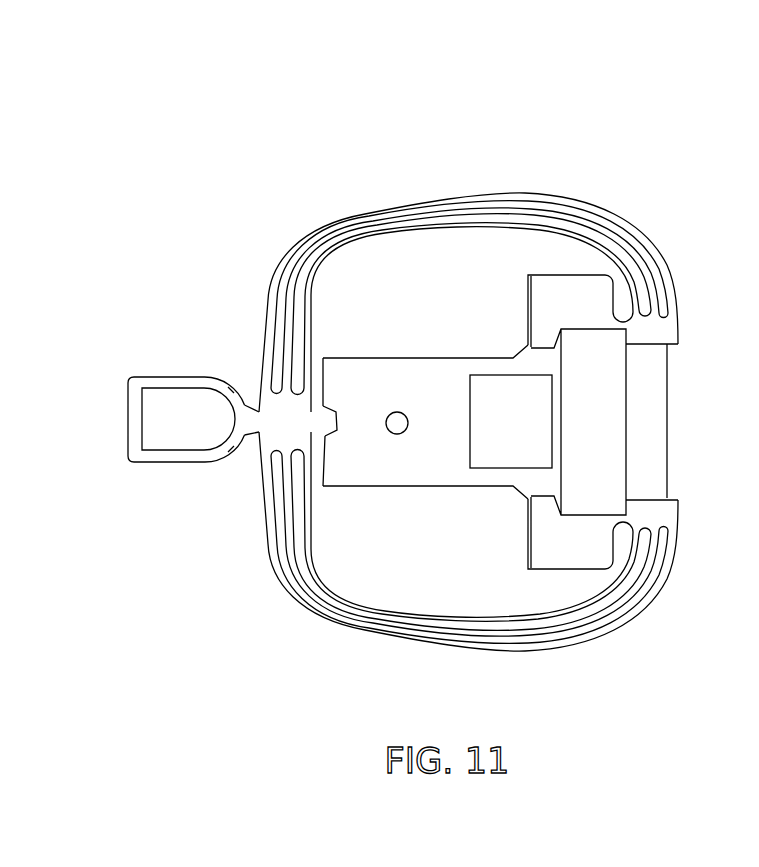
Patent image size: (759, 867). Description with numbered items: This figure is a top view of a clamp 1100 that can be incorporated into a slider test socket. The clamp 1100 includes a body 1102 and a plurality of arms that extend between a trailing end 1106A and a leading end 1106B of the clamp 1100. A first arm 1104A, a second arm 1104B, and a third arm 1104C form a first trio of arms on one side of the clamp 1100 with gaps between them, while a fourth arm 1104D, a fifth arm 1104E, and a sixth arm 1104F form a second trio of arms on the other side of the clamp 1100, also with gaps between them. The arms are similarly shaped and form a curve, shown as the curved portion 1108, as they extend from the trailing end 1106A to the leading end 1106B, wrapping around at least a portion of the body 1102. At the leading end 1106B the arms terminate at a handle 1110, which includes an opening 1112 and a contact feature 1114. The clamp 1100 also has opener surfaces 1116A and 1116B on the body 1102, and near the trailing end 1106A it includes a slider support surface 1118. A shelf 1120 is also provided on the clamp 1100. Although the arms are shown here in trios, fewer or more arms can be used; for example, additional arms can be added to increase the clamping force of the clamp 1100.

The clamp 1100 is at (277, 163).
The body 1102 is at (667, 331).
The first arm 1104A is at (583, 218).
The second arm 1104B is at (520, 215).
The third arm 1104C is at (433, 234).
The fourth arm 1104D is at (566, 637).
The fifth arm 1104E is at (497, 627).
The sixth arm 1104F is at (443, 608).
The trailing end 1106A is at (666, 508).
The leading end 1106B is at (263, 353).
The curved portion 1108 is at (374, 212).
The handle 1110 is at (137, 390).
The opening 1112 is at (193, 437).
The contact feature 1114 is at (322, 414).
The opener surface 1116A is at (528, 302).
The opener surface 1116B is at (528, 548).
The slider support surface 1118 is at (527, 512).
The shelf 1120 is at (417, 370).